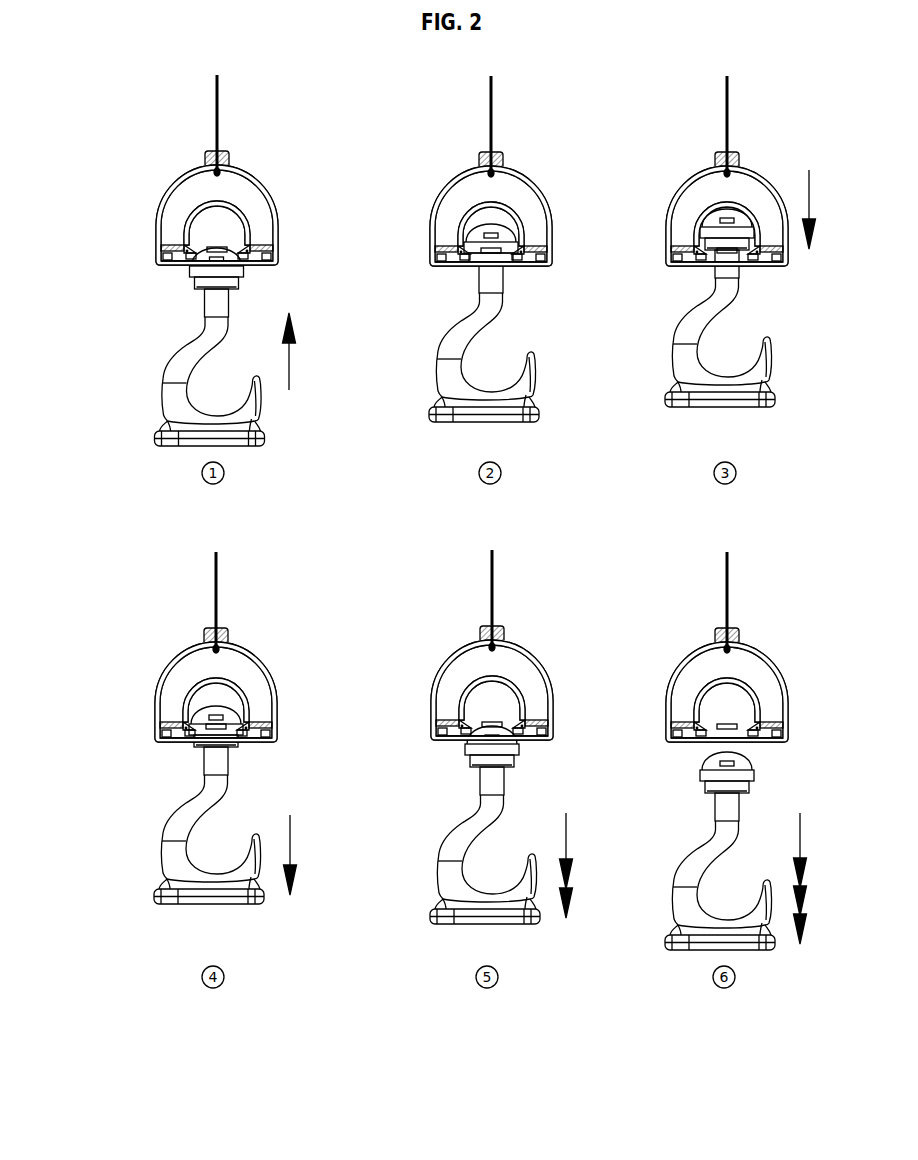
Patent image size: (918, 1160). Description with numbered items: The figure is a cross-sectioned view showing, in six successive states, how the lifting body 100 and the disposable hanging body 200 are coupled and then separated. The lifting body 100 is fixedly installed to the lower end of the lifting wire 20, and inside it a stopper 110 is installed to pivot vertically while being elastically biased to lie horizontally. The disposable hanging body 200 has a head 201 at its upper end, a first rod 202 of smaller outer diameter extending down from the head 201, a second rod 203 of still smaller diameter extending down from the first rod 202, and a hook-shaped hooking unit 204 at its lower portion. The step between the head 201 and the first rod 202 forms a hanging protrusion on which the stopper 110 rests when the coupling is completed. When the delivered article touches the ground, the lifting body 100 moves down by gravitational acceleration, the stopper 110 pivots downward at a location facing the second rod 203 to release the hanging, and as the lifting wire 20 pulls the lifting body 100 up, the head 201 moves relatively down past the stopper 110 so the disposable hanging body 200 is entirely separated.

The lifting wire 20 is at (220, 106).
The lifting body 100 is at (184, 178).
The stopper 110 is at (186, 250).
The disposable hanging body 200 is at (205, 347).
The head 201 is at (193, 270).
The first rod 202 is at (240, 283).
The second rod 203 is at (205, 302).
The hooking unit 204 is at (257, 398).